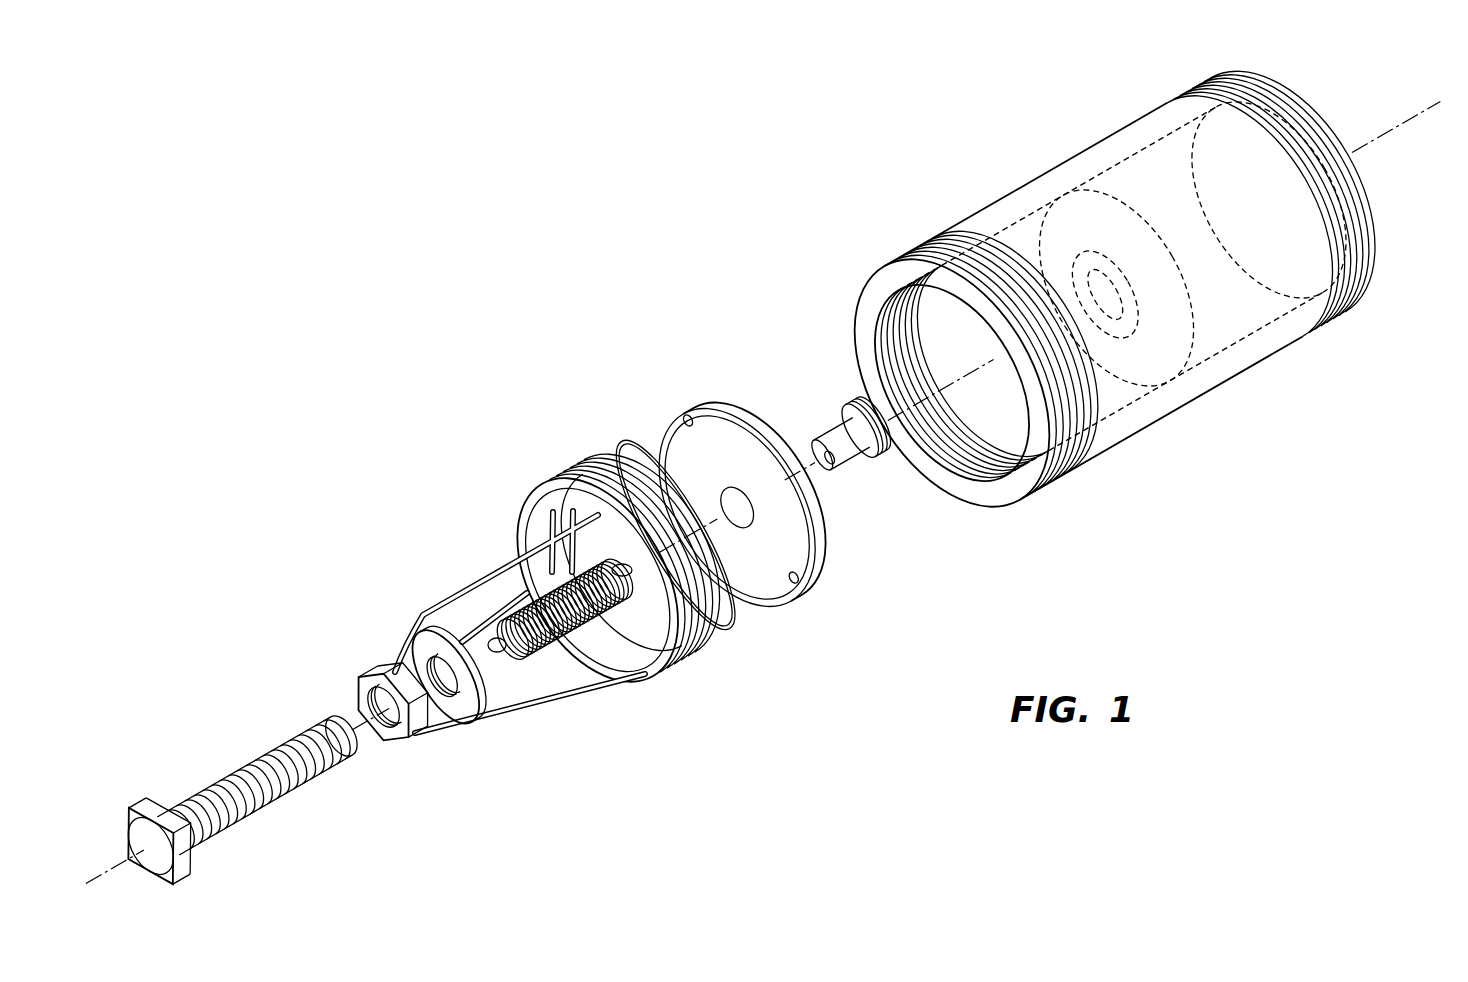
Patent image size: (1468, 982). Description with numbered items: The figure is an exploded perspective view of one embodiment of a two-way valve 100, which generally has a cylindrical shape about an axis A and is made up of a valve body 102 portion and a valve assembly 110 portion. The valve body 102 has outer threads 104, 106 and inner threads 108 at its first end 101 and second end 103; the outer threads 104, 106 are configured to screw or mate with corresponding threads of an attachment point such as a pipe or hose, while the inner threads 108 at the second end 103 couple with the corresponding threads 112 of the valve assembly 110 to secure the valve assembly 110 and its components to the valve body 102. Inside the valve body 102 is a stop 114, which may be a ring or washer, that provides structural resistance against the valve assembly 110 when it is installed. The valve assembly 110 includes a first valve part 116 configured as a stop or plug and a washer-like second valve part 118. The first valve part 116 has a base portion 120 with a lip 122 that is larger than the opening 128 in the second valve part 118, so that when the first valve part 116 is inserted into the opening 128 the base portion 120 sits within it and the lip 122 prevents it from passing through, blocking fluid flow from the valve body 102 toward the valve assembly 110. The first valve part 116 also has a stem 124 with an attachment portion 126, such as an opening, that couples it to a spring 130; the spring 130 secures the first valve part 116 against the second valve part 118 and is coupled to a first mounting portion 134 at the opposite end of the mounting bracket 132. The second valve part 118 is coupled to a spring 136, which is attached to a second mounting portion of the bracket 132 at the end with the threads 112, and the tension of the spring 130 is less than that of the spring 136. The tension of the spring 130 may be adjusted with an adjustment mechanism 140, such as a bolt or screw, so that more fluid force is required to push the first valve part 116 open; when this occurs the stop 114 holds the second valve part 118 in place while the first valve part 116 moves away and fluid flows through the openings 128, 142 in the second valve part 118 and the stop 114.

The two-way valve 100 is at (416, 209).
The first end 101 is at (1330, 105).
The valve body 102 is at (923, 158).
The second end 103 is at (1051, 498).
The outer threads 104 is at (1240, 86).
The outer threads 106 is at (930, 251).
The inner threads 108 is at (885, 320).
The valve assembly 110 is at (466, 372).
The threads 112 is at (567, 488).
The stop 114 is at (1047, 197).
The first valve part 116 is at (811, 415).
The second valve part 118 is at (724, 447).
The base portion 120 is at (852, 417).
The lip 122 is at (890, 455).
The stem 124 is at (842, 452).
The attachment portion 126 is at (830, 470).
The opening 128 is at (752, 560).
The spring 130 is at (518, 567).
The mounting bracket 132 is at (465, 587).
The first mounting portion 134 is at (443, 611).
The spring 136 is at (617, 478).
The adjustment mechanism 140 is at (270, 775).
The opening 142 is at (1130, 322).